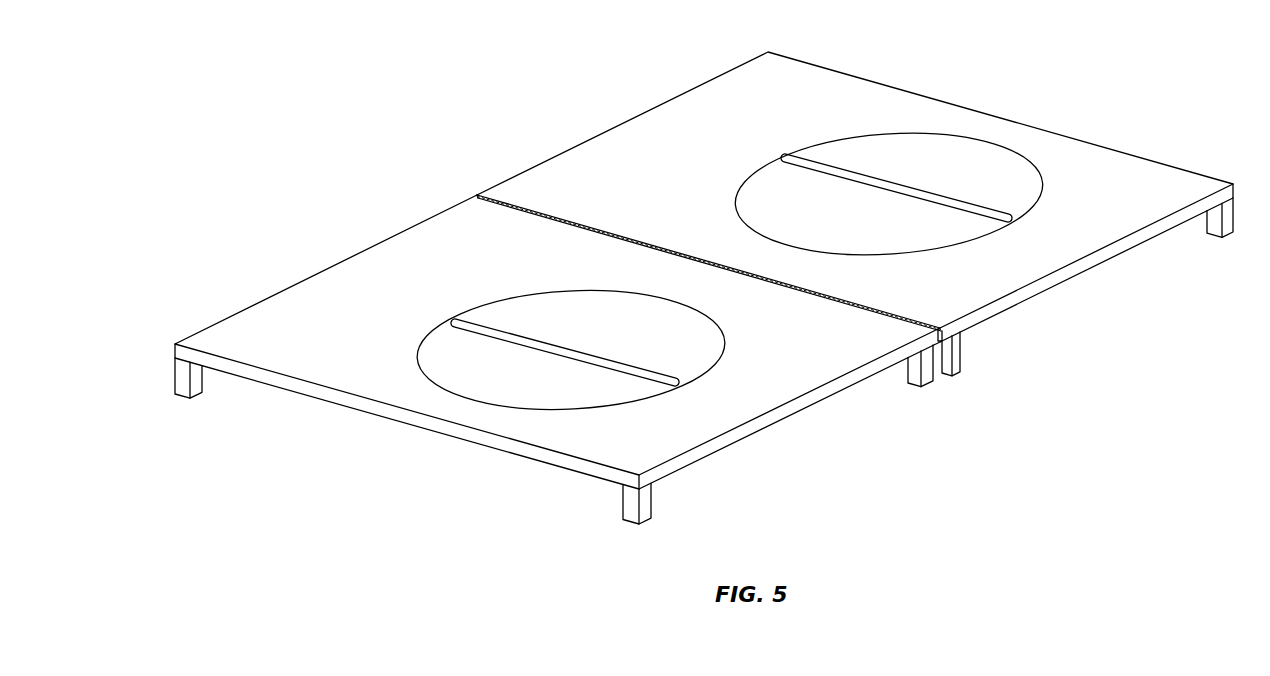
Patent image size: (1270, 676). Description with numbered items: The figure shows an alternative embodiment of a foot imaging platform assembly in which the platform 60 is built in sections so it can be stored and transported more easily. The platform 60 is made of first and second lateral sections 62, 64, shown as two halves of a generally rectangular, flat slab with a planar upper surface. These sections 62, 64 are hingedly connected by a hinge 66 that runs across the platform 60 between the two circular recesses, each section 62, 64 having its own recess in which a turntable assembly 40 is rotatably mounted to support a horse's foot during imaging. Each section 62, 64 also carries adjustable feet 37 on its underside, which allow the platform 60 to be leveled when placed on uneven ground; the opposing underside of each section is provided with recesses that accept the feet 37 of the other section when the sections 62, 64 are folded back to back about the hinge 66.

The platform 60 is at (425, 90).
The first lateral section 62 is at (860, 80).
The second lateral section 64 is at (340, 263).
The hinge 66 is at (893, 302).
The turntable assembly 40 is at (1053, 168).
The adjustable foot 37 is at (178, 377).